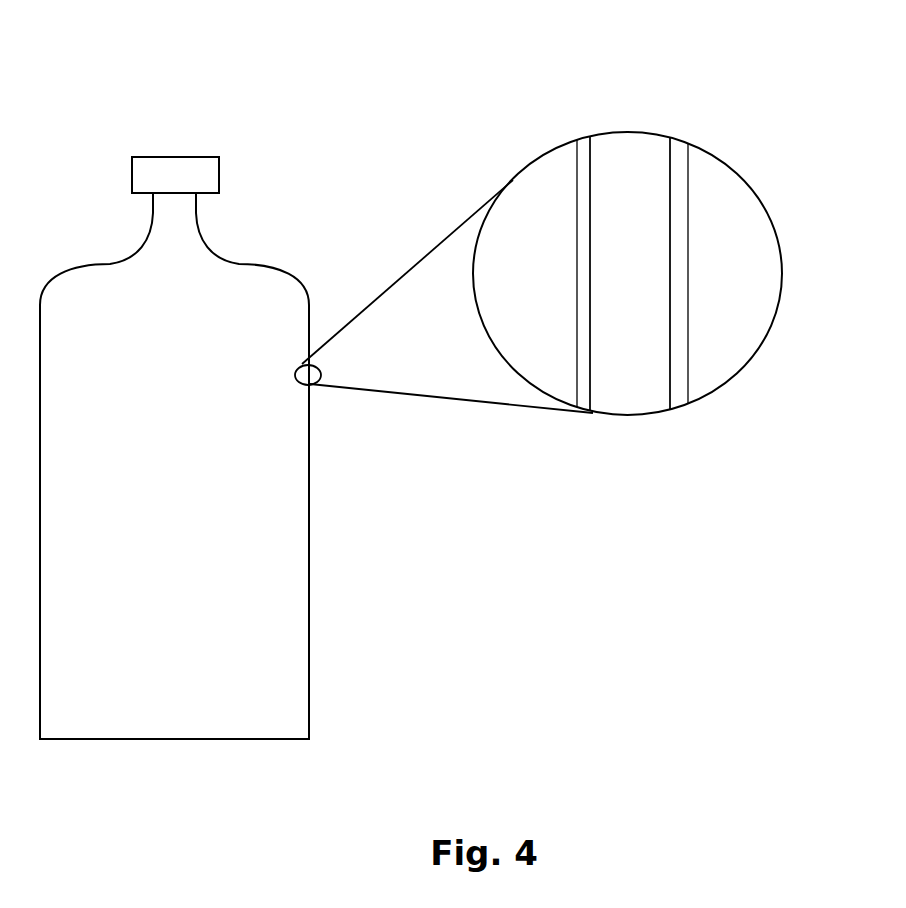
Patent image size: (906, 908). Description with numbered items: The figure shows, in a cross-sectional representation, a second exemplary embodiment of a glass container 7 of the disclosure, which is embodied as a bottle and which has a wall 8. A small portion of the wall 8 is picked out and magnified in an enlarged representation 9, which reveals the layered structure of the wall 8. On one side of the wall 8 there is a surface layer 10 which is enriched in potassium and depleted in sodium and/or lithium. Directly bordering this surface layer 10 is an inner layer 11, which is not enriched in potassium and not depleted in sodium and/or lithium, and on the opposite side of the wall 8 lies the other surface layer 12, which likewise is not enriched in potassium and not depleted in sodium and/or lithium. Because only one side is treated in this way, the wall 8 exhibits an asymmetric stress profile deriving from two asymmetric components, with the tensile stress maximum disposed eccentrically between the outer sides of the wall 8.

The glass container 7 is at (241, 108).
The wall 8 is at (310, 454).
The enlarged representation 9 is at (468, 152).
The surface layer 10 is at (680, 245).
The inner layer 11 is at (628, 388).
The other surface layer 12 is at (583, 235).